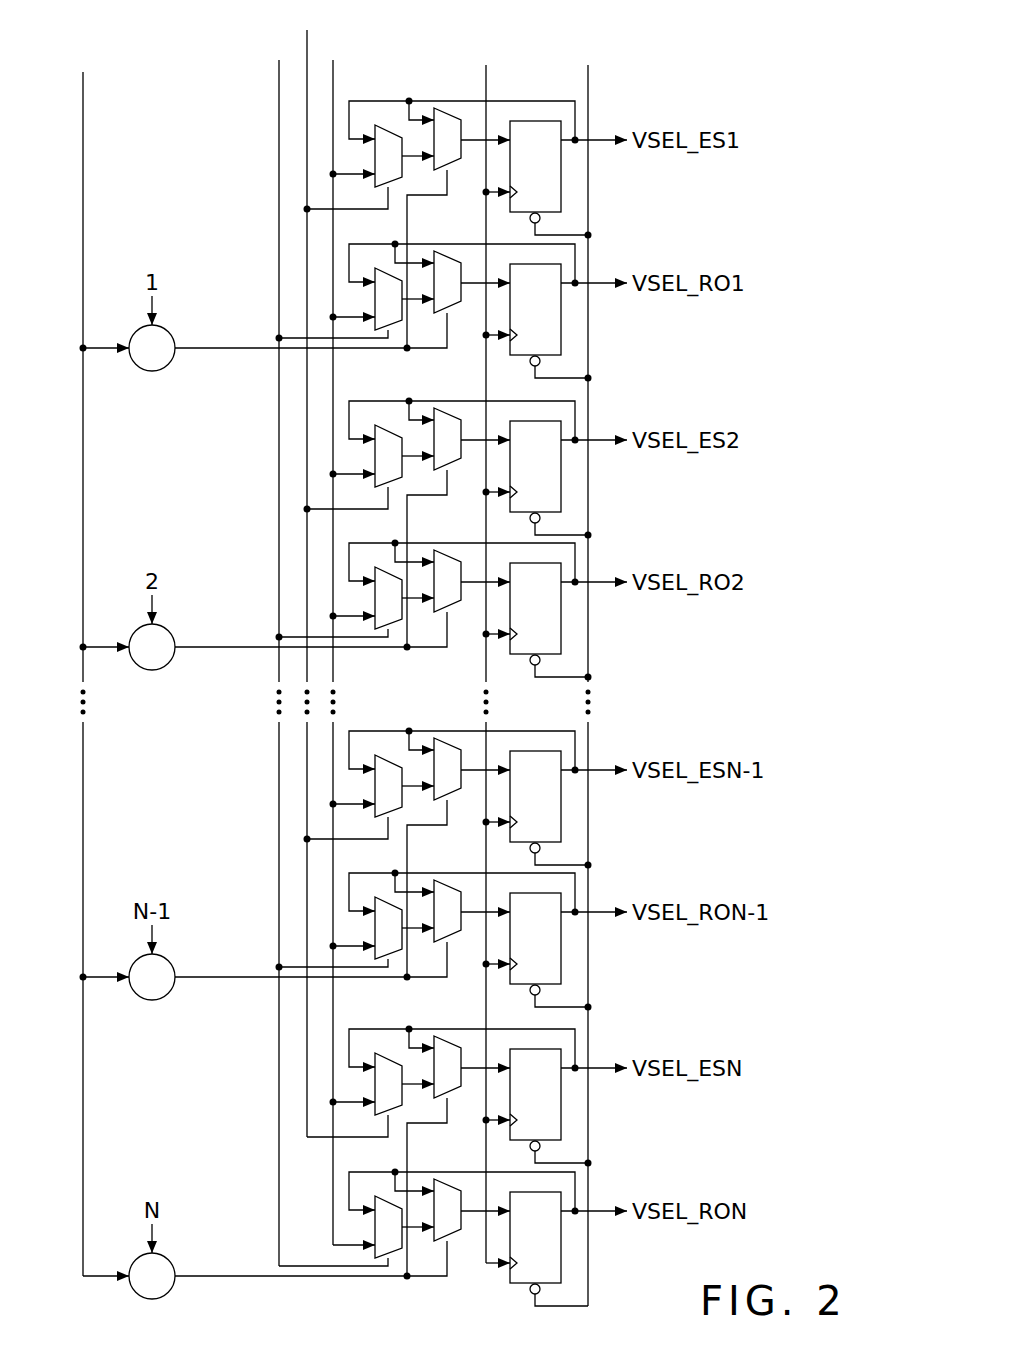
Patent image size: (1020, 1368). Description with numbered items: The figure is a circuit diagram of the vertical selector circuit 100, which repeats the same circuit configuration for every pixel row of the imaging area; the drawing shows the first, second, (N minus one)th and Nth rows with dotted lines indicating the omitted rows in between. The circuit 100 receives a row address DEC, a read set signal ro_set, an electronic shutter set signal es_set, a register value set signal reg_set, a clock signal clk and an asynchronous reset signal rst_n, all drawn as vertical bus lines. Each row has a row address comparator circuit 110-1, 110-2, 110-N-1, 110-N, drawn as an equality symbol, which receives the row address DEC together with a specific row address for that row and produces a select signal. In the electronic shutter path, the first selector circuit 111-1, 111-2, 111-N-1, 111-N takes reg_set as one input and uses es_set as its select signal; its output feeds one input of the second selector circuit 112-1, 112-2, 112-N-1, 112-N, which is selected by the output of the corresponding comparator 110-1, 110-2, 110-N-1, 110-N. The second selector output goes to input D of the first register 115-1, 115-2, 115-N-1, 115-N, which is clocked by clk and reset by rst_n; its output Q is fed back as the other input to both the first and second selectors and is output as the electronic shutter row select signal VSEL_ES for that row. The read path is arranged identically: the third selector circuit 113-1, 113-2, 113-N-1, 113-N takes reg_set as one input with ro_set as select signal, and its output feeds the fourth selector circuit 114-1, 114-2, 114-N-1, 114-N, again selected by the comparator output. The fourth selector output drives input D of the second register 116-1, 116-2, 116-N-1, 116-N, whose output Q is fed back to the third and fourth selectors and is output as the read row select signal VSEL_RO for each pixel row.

The vertical selector circuit 100 is at (752, 699).
The row address comparator circuit 110-1 is at (190, 355).
The row address comparator circuit 110-2 is at (190, 654).
The row address comparator circuit 110-N-1 is at (155, 1003).
The row address comparator circuit 110-N is at (190, 1283).
The first selector circuit 111-1 is at (300, 155).
The first selector circuit 111-2 is at (300, 455).
The first selector circuit 111-N-1 is at (288, 785).
The first selector circuit 111-N is at (299, 1083).
The second selector circuit 112-1 is at (439, 116).
The second selector circuit 112-2 is at (439, 416).
The second selector circuit 112-N-1 is at (427, 746).
The second selector circuit 112-N is at (438, 1044).
The third selector circuit 113-1 is at (300, 298).
The third selector circuit 113-2 is at (300, 597).
The third selector circuit 113-N-1 is at (288, 912).
The third selector circuit 113-N is at (299, 1226).
The fourth selector circuit 114-1 is at (439, 259).
The fourth selector circuit 114-2 is at (439, 558).
The fourth selector circuit 114-N-1 is at (563, 904).
The fourth selector circuit 114-N is at (438, 1187).
The first register 115-1 is at (591, 172).
The first register 115-2 is at (591, 472).
The first register 115-N-1 is at (603, 802).
The first register 115-N is at (592, 1100).
The second register 116-1 is at (591, 315).
The second register 116-2 is at (591, 614).
The second register 116-N-1 is at (603, 944).
The second register 116-N is at (592, 1243).